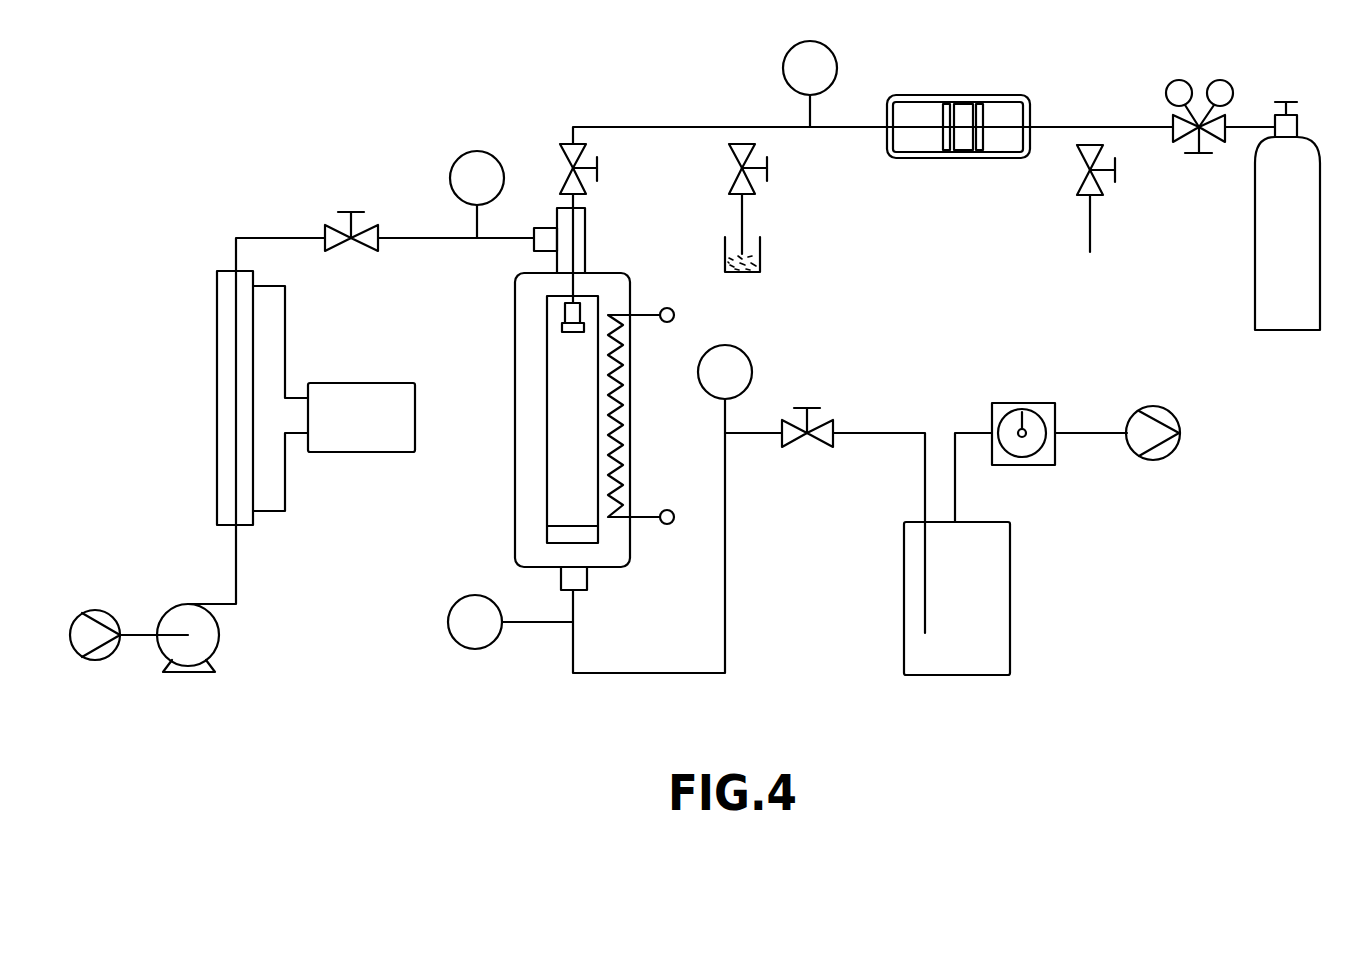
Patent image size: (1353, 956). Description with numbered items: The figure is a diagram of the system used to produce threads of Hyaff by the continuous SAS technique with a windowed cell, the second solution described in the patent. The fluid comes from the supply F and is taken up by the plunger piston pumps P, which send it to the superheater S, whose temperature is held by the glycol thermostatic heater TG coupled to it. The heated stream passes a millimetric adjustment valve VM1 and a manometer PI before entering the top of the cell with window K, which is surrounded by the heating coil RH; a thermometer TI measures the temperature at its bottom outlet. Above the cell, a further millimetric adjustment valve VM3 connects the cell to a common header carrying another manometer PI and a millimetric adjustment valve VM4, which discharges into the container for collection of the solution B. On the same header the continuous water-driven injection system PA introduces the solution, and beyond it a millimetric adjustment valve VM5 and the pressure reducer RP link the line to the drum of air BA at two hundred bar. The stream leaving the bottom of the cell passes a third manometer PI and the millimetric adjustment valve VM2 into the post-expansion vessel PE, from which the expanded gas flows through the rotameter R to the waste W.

The superheater S is at (221, 398).
The glycol thermostatic heater TG is at (334, 398).
The millimetric adjustment valve VM1 is at (351, 248).
The manometer PI is at (643, 237).
The millimetric adjustment valve VM3 is at (605, 164).
The millimetric adjustment valve VM4 is at (775, 164).
The container for collection of the solution B is at (752, 245).
The continuous water-driven injection system PA is at (958, 143).
The millimetric adjustment valve VM5 is at (1121, 164).
The pressure reducer RP is at (1199, 98).
The drum of air at 200 bar BA is at (1287, 216).
The cell with window K is at (558, 392).
The heating coil RH is at (656, 412).
The millimetric adjustment valve VM2 is at (807, 443).
The post-expansion vessel PE is at (957, 598).
The rotameter R is at (1023, 453).
The waste W is at (1153, 452).
The thermometer TI is at (510, 622).
The supply F is at (129, 619).
The plunger piston pumps P is at (204, 638).